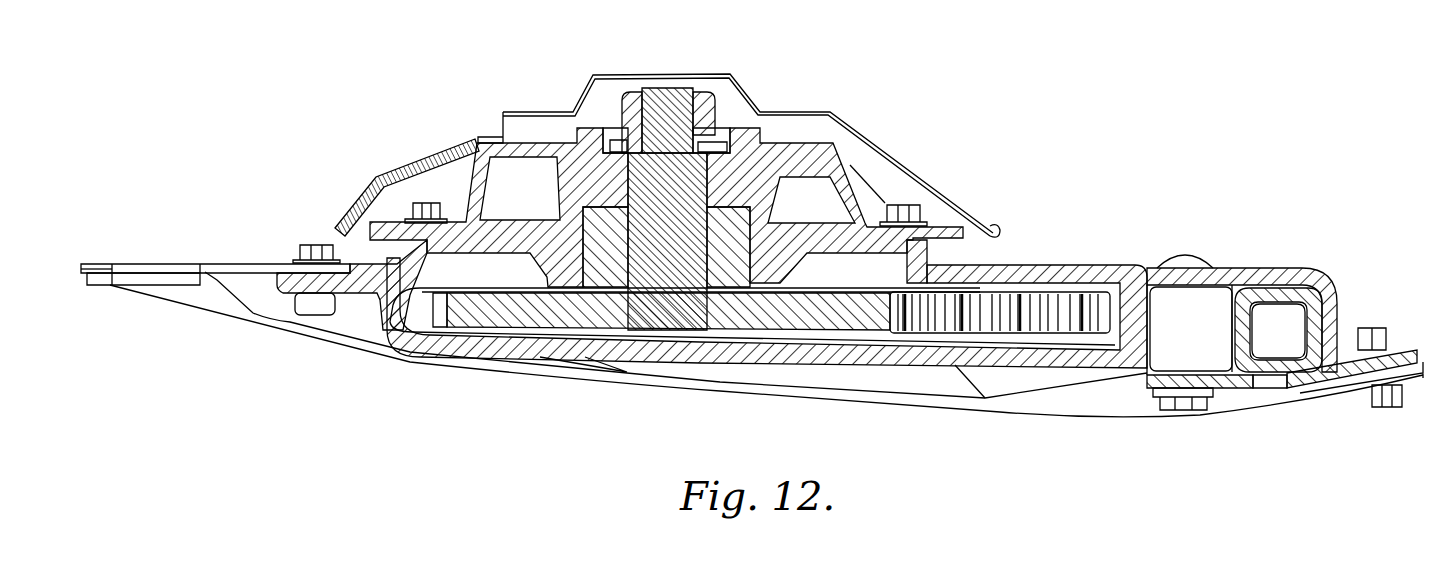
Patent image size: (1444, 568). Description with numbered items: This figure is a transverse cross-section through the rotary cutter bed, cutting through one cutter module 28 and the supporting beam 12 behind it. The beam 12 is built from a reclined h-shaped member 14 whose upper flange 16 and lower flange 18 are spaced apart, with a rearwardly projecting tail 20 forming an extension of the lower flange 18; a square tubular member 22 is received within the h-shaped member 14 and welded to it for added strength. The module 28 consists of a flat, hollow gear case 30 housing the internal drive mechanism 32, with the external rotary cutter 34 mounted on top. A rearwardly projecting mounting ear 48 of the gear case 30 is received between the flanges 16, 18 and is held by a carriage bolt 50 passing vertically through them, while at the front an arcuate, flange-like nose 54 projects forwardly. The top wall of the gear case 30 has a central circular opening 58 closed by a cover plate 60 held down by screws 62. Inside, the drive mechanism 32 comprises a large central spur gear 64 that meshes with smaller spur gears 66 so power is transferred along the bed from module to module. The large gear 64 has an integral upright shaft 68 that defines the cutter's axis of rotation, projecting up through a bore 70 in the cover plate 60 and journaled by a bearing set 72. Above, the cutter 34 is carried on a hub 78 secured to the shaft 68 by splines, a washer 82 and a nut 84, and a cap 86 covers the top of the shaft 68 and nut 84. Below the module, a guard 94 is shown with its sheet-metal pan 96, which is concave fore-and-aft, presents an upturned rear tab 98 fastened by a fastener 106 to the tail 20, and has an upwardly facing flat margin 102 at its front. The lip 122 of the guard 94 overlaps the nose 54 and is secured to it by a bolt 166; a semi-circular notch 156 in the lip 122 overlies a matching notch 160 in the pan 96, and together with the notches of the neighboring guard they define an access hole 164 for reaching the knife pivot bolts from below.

The elongated beam 12 is at (1258, 262).
The h-shaped member 14 is at (1335, 270).
The upper flange 16 is at (1283, 277).
The lower flange 18 is at (1237, 385).
The tail 20 is at (1404, 352).
The square tubular member 22 is at (1308, 333).
The cutter module 28 is at (1038, 96).
The gear case 30 is at (1072, 262).
The drive mechanism 32 is at (947, 343).
The rotary cutter 34 is at (840, 100).
The mounting ear 48 is at (1160, 355).
The carriage bolt 50 is at (1187, 262).
The nose 54 is at (290, 293).
The circular opening 58 is at (915, 258).
The cover plate 60 is at (885, 220).
The screw 62 is at (428, 203).
The large central spur gear 64 is at (500, 322).
The smaller spur gear 66 is at (1043, 322).
The upright shaft 68 is at (668, 105).
The bore 70 is at (748, 215).
The bearing set 72 is at (425, 172).
The hub 78 is at (810, 160).
The washer 82 is at (737, 133).
The nut 84 is at (735, 100).
The cap 86 is at (620, 74).
The guard 94 is at (167, 333).
The pan 96 is at (457, 365).
The rear tab 98 is at (1322, 395).
The flat margin 102 is at (95, 280).
The fastener 106 is at (1397, 400).
The lip 122 is at (257, 263).
The semi-circular notch 156 is at (163, 262).
The semi-circular notch 160 is at (175, 283).
The access hole 164 is at (130, 262).
The bolt 166 is at (311, 245).